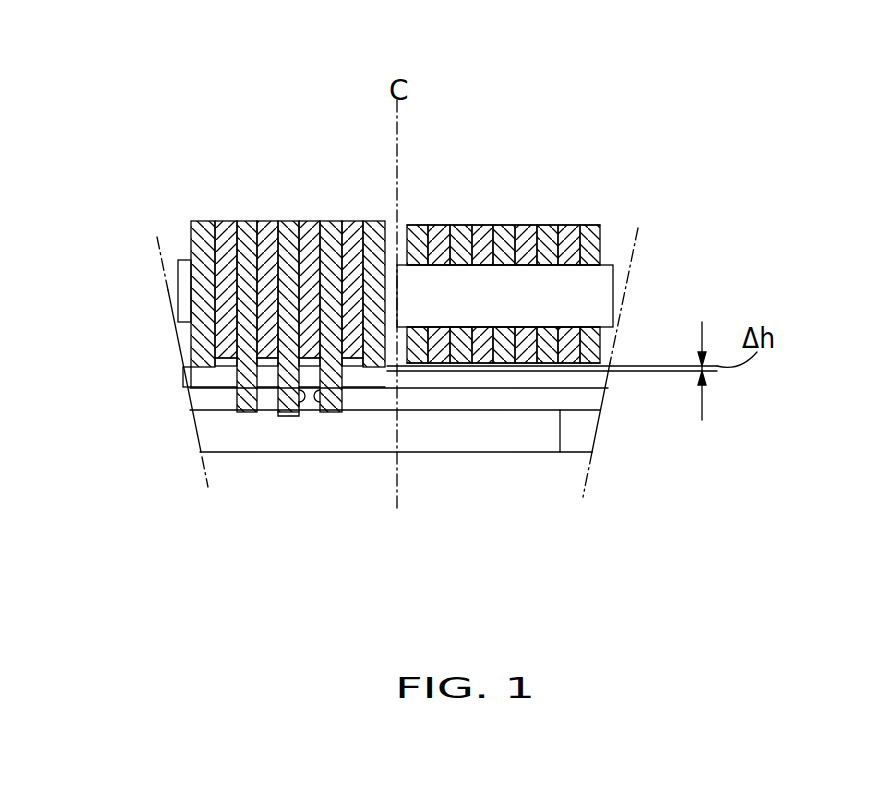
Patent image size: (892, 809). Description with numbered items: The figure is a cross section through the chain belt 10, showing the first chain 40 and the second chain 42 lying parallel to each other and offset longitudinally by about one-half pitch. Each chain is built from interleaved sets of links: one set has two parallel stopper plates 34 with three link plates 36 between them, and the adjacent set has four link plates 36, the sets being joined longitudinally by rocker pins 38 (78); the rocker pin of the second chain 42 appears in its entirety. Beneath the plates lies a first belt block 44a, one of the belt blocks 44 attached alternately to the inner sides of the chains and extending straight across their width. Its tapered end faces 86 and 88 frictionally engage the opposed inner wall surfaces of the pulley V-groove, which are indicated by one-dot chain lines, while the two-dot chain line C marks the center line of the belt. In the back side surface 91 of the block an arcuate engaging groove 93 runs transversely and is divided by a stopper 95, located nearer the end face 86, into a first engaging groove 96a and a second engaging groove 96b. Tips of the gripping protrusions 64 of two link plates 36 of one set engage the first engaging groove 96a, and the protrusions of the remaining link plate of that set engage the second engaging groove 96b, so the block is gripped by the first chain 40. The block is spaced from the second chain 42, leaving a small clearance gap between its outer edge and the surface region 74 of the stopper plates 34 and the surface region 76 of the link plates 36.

The chain belt 10 is at (130, 156).
The first chain 40 is at (227, 90).
The second chain 42 is at (480, 86).
The stopper plate 34 is at (205, 220).
The link plate 36 is at (223, 220).
The rocker pin 38 is at (413, 264).
The bus bar conductor 78 is at (178, 262).
The gripping protrusion 64 is at (298, 400).
The tapered end face 86 is at (192, 418).
The tapered end face 88 is at (597, 440).
The engaging groove 93 is at (450, 470).
The first engaging groove 96a is at (213, 410).
The second engaging groove 96b is at (590, 392).
The stopper 95 is at (311, 418).
The surface region 74 is at (420, 370).
The surface region 76 is at (527, 365).
The belt block 44 is at (396, 478).
The first belt block 44a is at (443, 440).
The back side surface 91 is at (562, 438).